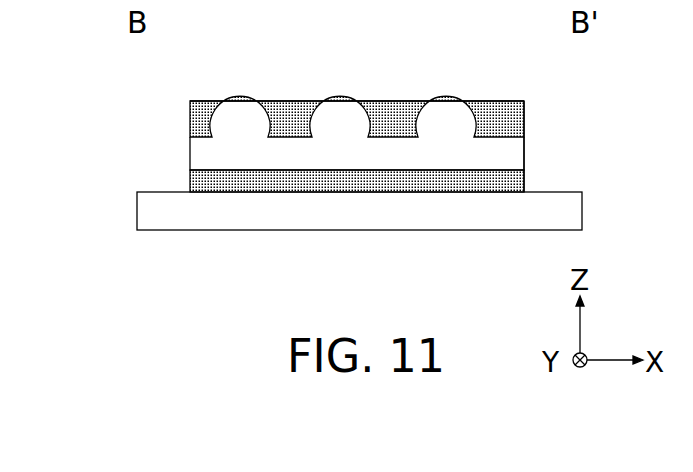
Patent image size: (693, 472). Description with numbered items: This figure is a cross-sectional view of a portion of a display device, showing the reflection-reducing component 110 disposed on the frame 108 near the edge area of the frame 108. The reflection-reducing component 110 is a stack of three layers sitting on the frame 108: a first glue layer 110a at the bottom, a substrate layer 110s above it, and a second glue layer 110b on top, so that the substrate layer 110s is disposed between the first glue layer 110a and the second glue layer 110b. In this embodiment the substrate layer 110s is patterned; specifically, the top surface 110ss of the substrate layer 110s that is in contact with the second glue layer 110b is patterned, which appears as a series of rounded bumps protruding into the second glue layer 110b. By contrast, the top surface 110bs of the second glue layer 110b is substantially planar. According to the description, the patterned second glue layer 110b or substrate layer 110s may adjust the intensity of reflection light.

The frame 108 is at (566, 219).
The reflection-reducing component 110 is at (78, 113).
The first glue layer 110a is at (190, 176).
The substrate layer 110s is at (197, 152).
The second glue layer 110b is at (190, 128).
The top surface of the second glue layer 110bs is at (357, 100).
The top surface of the substrate layer 110ss is at (498, 135).